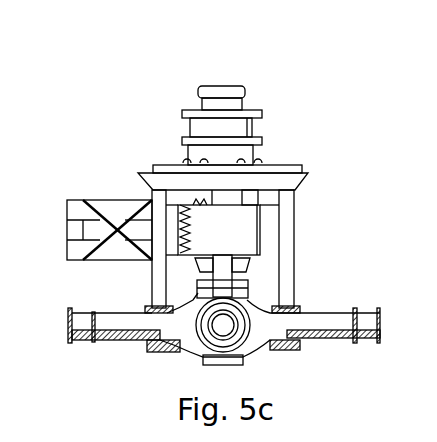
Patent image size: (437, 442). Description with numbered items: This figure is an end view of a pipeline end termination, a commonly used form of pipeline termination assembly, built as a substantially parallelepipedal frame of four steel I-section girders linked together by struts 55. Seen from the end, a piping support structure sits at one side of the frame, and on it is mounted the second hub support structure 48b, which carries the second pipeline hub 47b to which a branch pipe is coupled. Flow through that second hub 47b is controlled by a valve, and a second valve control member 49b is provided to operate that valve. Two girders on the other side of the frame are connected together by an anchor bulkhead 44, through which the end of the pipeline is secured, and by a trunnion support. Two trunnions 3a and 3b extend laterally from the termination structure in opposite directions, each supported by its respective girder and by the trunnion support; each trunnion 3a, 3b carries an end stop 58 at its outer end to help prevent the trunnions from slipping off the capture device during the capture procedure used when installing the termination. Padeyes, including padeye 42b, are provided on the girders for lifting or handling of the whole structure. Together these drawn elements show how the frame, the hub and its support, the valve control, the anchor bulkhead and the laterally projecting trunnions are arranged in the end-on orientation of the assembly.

The trunnion 3a is at (110, 342).
The trunnion 3b is at (327, 320).
The padeye 42b is at (152, 177).
The anchor bulkhead 44 is at (183, 333).
The second pipeline hub 47b is at (228, 83).
The second hub support structure 48b is at (257, 125).
The second valve control member 49b is at (67, 228).
The strut 55 is at (288, 247).
The end stop 58 is at (80, 312).